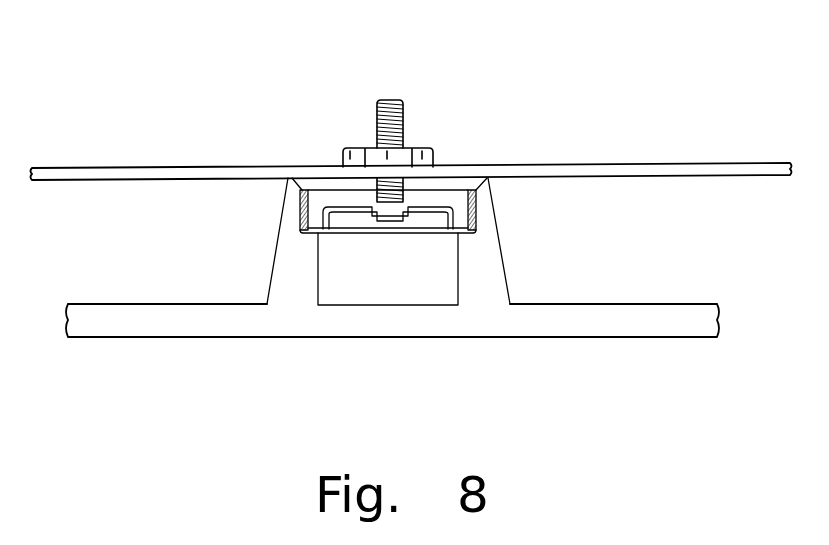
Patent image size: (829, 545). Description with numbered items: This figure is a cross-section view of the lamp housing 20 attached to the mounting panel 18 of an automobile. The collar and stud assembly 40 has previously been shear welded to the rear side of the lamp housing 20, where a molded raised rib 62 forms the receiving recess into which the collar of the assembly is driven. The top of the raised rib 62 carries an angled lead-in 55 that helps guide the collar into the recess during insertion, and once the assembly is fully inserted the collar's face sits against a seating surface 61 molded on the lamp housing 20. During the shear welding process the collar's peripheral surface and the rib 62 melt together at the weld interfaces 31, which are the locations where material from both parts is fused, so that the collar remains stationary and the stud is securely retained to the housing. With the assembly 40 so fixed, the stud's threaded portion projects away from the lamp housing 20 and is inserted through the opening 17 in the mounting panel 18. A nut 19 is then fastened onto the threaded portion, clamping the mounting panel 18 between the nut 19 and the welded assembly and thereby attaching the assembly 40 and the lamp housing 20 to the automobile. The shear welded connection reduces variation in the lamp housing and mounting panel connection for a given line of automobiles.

The collar and stud assembly 40 is at (424, 110).
The nut 19 is at (365, 148).
The opening 17 is at (405, 191).
The mounting panel 18 is at (577, 166).
The angled lead-in 55 is at (291, 183).
The weld interface 31 is at (484, 202).
The seating surface 61 is at (312, 236).
The raised rib 62 is at (486, 288).
The lamp housing 20 is at (112, 334).